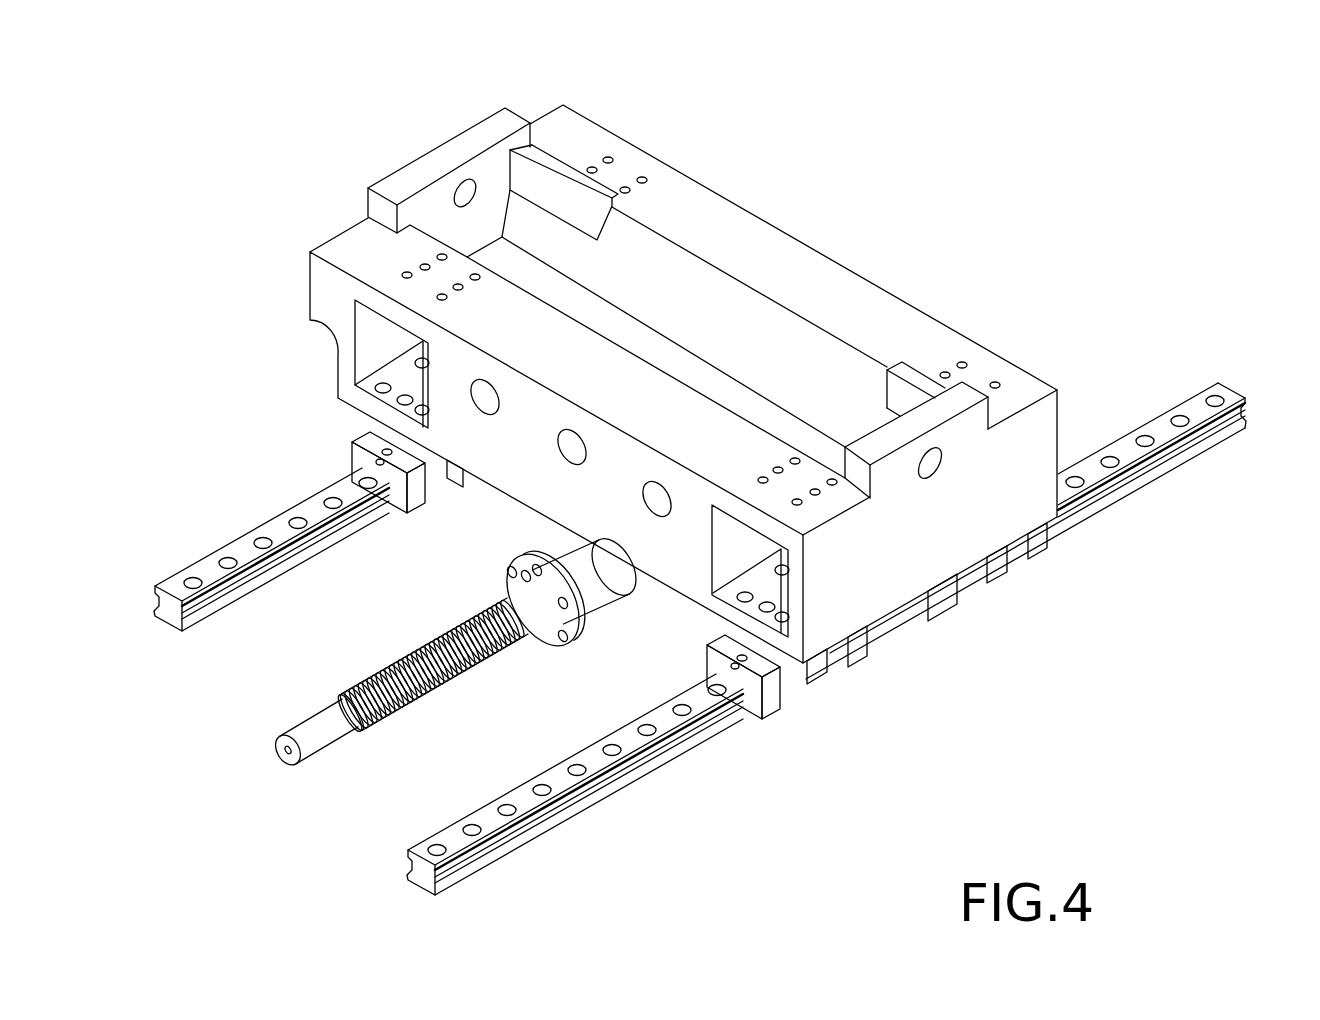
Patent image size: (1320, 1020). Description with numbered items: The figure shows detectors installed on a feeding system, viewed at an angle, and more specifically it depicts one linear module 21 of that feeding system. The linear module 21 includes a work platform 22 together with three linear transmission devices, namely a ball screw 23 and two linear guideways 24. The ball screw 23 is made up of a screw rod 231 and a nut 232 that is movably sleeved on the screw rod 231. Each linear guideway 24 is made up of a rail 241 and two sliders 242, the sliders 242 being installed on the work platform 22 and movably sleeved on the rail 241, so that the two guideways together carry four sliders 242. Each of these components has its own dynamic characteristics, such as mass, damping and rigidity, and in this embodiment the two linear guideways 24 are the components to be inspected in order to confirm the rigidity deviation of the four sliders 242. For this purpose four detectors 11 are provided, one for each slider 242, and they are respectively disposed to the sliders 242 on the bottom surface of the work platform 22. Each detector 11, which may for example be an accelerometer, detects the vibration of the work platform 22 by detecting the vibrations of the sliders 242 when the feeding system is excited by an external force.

The linear module 21 is at (1143, 118).
The work platform 22 is at (775, 245).
The ball screw 23 is at (460, 665).
The screw rod 231 is at (507, 633).
The nut 232 is at (598, 600).
The linear guideway 24 is at (700, 639).
The rail 241 is at (208, 565).
The slider 242 is at (435, 483).
The detector 11 is at (473, 477).